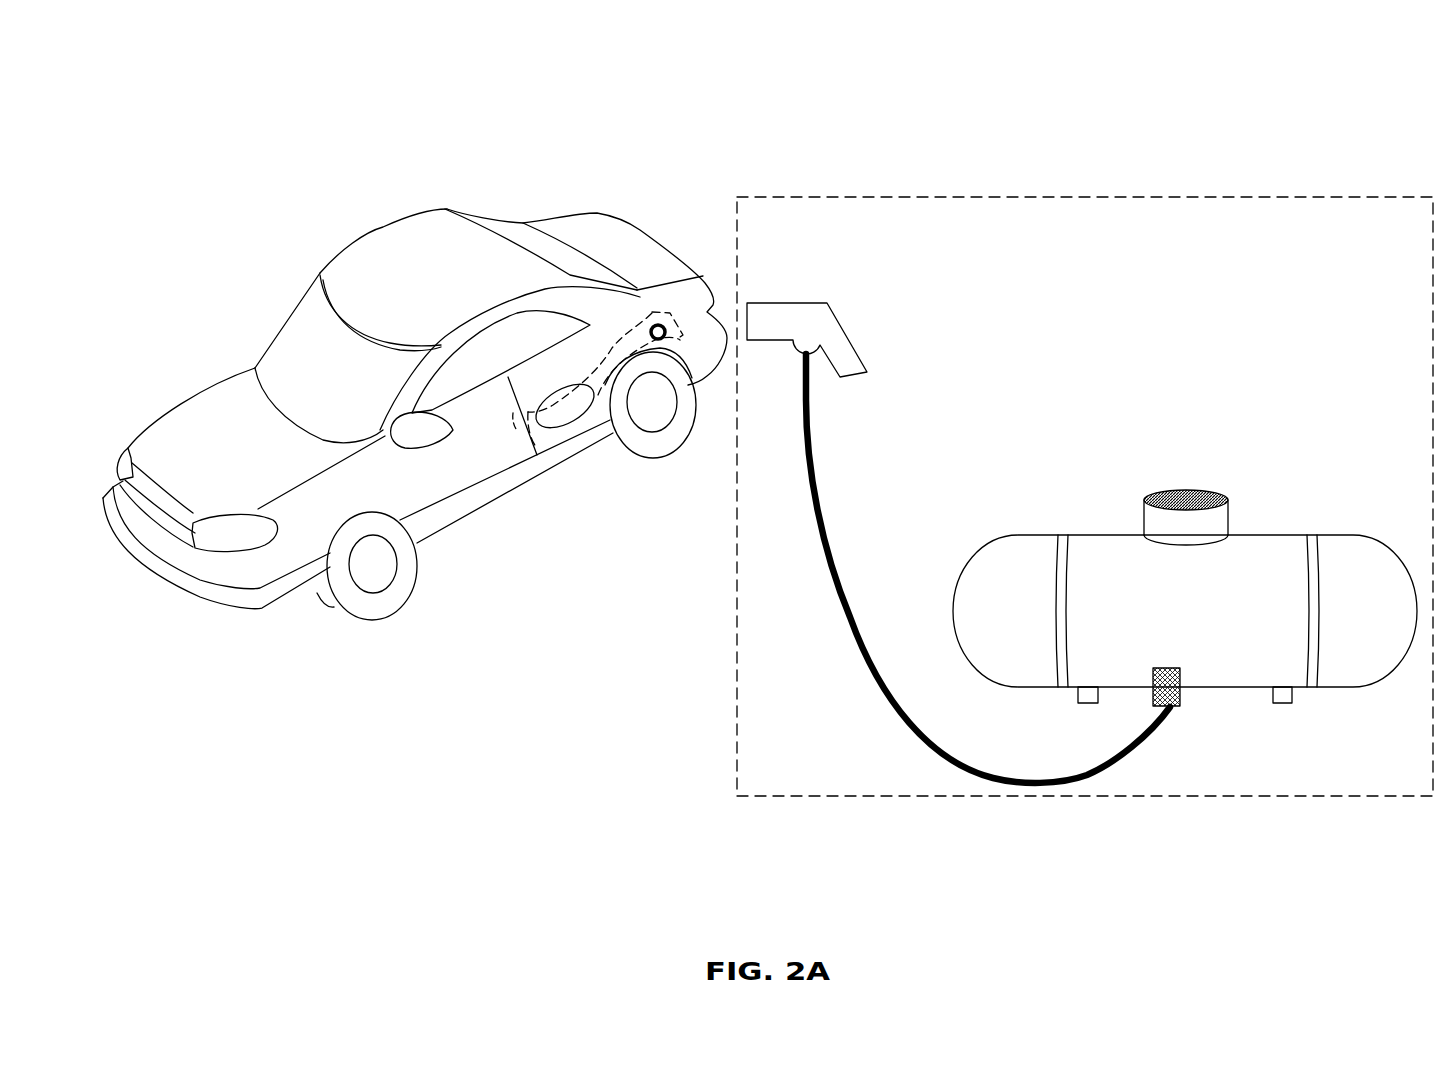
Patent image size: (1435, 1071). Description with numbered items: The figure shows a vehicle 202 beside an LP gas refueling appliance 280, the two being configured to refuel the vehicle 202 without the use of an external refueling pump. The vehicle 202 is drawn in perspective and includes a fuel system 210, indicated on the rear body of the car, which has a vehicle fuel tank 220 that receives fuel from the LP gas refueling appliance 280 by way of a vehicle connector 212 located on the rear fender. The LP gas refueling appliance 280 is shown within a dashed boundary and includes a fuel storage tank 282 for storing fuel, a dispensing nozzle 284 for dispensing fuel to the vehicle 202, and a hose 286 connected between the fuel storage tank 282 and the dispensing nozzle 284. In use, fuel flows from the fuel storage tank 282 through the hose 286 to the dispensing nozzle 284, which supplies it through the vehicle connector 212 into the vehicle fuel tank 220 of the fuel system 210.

The vehicle 202 is at (383, 227).
The fuel system 210 is at (590, 435).
The vehicle connector 212 is at (658, 323).
The vehicle fuel tank 220 is at (563, 420).
The LP gas refueling appliance 280 is at (1163, 197).
The fuel storage tank 282 is at (1267, 535).
The dispensing nozzle 284 is at (777, 303).
The hose 286 is at (823, 519).